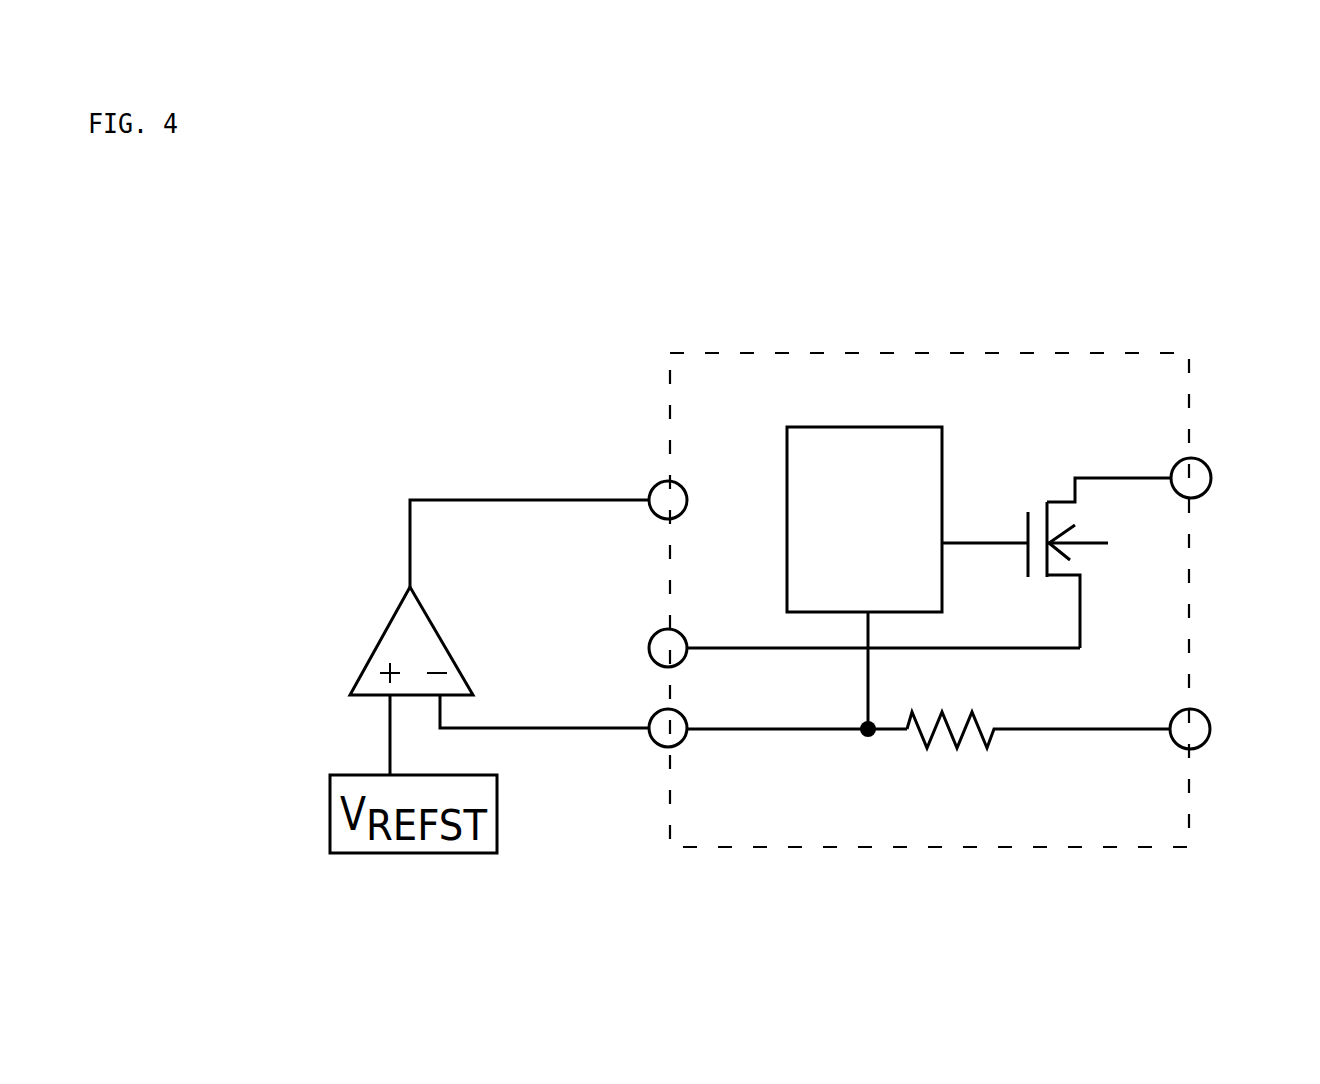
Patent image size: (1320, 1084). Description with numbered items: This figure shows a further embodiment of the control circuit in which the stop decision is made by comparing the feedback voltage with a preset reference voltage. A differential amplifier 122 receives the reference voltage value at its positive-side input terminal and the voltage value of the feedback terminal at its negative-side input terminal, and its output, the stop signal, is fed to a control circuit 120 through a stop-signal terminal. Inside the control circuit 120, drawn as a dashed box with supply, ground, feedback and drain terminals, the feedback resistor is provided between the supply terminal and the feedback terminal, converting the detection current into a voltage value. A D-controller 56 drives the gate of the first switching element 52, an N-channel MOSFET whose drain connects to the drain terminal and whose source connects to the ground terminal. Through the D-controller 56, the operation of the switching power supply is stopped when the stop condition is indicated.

The control circuit 120 is at (853, 353).
The D-controller 56 is at (847, 427).
The first switching element 52 is at (1097, 558).
The differential amplifier 122 is at (358, 587).